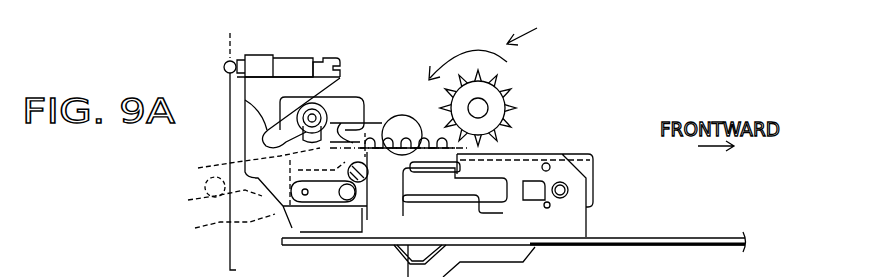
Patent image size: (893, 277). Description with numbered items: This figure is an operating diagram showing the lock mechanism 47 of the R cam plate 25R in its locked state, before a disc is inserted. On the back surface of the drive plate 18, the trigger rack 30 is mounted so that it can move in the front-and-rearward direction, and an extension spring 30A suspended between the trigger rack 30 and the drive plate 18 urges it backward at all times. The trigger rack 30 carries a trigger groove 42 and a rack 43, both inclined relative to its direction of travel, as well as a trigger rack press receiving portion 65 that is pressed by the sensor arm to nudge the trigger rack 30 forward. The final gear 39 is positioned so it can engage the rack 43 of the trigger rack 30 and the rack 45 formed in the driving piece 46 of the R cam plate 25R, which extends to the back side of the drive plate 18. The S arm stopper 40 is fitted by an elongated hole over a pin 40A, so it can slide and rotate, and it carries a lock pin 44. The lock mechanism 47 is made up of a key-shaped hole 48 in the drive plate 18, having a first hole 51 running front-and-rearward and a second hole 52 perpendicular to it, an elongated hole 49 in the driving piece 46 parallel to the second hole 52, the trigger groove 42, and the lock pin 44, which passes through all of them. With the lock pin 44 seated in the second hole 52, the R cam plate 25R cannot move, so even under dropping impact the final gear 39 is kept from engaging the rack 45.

The drive plate 18 is at (568, 118).
The R cam plate 25R is at (654, 247).
The trigger rack 30 is at (595, 180).
The extension spring 30A is at (292, 58).
The final gear 39 is at (513, 90).
The S arm stopper 40 is at (213, 233).
The pin 40A is at (213, 204).
The trigger groove 42 is at (229, 94).
The rack 43 is at (423, 133).
The lock pin 44 is at (320, 108).
The rack 45 is at (407, 145).
The driving piece 46 is at (267, 76).
The lock mechanism 47 is at (494, 44).
The key-shaped hole 48 is at (364, 112).
The elongated hole 49 is at (203, 181).
The first hole 51 is at (386, 112).
The second hole 52 is at (236, 134).
The trigger rack press receiving portion 65 is at (480, 213).